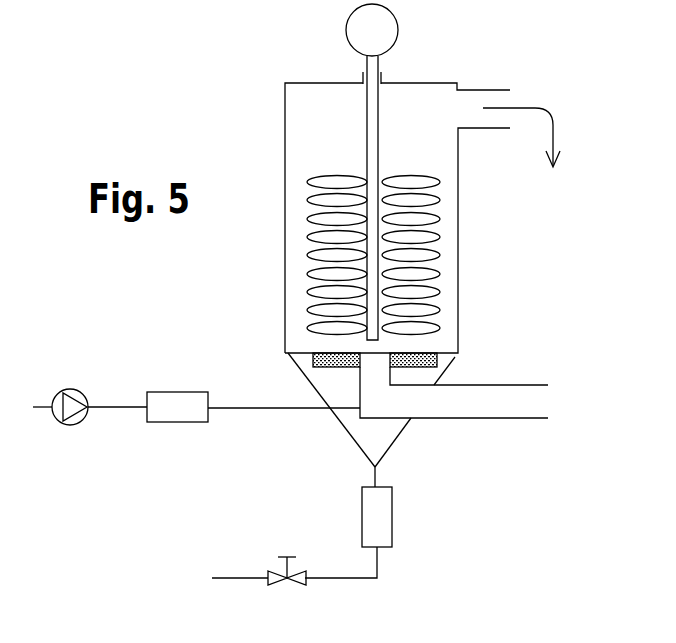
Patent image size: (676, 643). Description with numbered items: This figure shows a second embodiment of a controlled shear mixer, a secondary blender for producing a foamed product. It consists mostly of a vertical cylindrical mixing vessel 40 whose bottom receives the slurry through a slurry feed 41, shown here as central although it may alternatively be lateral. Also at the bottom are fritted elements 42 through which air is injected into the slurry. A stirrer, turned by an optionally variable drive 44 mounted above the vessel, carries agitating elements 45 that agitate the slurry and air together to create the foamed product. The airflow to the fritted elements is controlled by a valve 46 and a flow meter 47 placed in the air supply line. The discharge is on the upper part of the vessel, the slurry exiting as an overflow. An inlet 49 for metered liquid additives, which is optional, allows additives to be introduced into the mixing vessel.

The vertical cylindrical mixing vessel 40 is at (460, 298).
The slurry feed 41 is at (360, 385).
The fritted elements 42 is at (430, 382).
The variable drive 44 is at (399, 40).
The agitating elements 45 is at (367, 134).
The valve 46 is at (275, 572).
The flow meter 47 is at (380, 524).
The inlet 49 is at (76, 392).